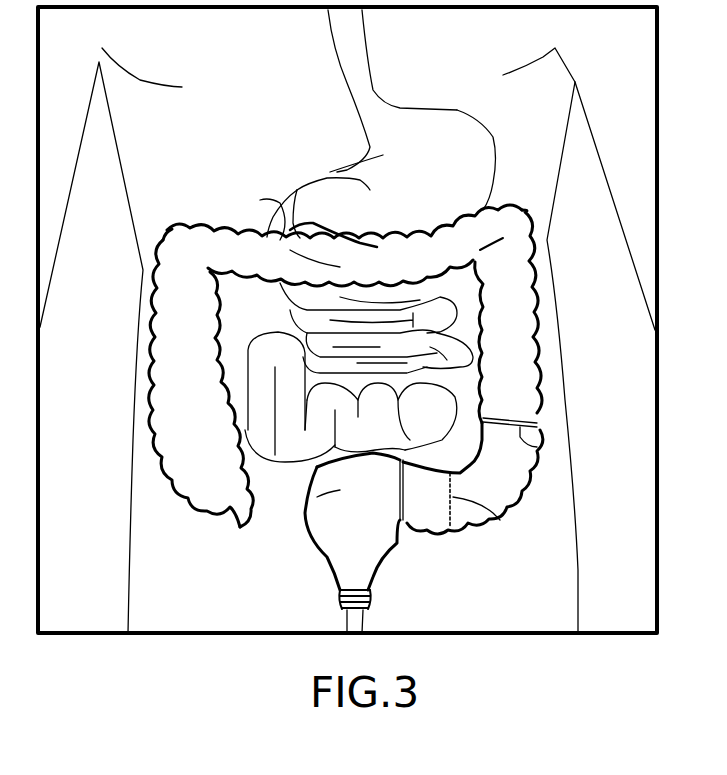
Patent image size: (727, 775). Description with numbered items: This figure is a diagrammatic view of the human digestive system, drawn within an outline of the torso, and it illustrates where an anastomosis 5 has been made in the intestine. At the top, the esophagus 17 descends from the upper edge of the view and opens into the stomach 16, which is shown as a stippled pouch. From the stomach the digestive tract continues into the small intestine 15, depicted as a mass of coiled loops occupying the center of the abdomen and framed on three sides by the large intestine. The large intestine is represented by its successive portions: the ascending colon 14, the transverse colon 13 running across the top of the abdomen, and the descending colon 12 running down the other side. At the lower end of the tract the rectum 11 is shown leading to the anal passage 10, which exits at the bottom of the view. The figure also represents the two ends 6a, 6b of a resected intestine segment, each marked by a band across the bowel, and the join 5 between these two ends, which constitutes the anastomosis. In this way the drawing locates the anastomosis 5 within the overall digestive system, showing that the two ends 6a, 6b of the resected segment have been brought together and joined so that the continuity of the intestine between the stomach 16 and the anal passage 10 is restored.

The esophagus 17 is at (357, 61).
The stomach 16 is at (335, 172).
The transverse colon 13 is at (290, 240).
The ascending colon 14 is at (182, 326).
The small intestine 15 is at (292, 413).
The descending colon 12 is at (520, 413).
The end of the resected intestine segment 6b is at (535, 449).
The anastomosis 5 is at (495, 512).
The end of the resected intestine segment 6a is at (407, 497).
The rectum 11 is at (303, 525).
The anal passage 10 is at (372, 602).